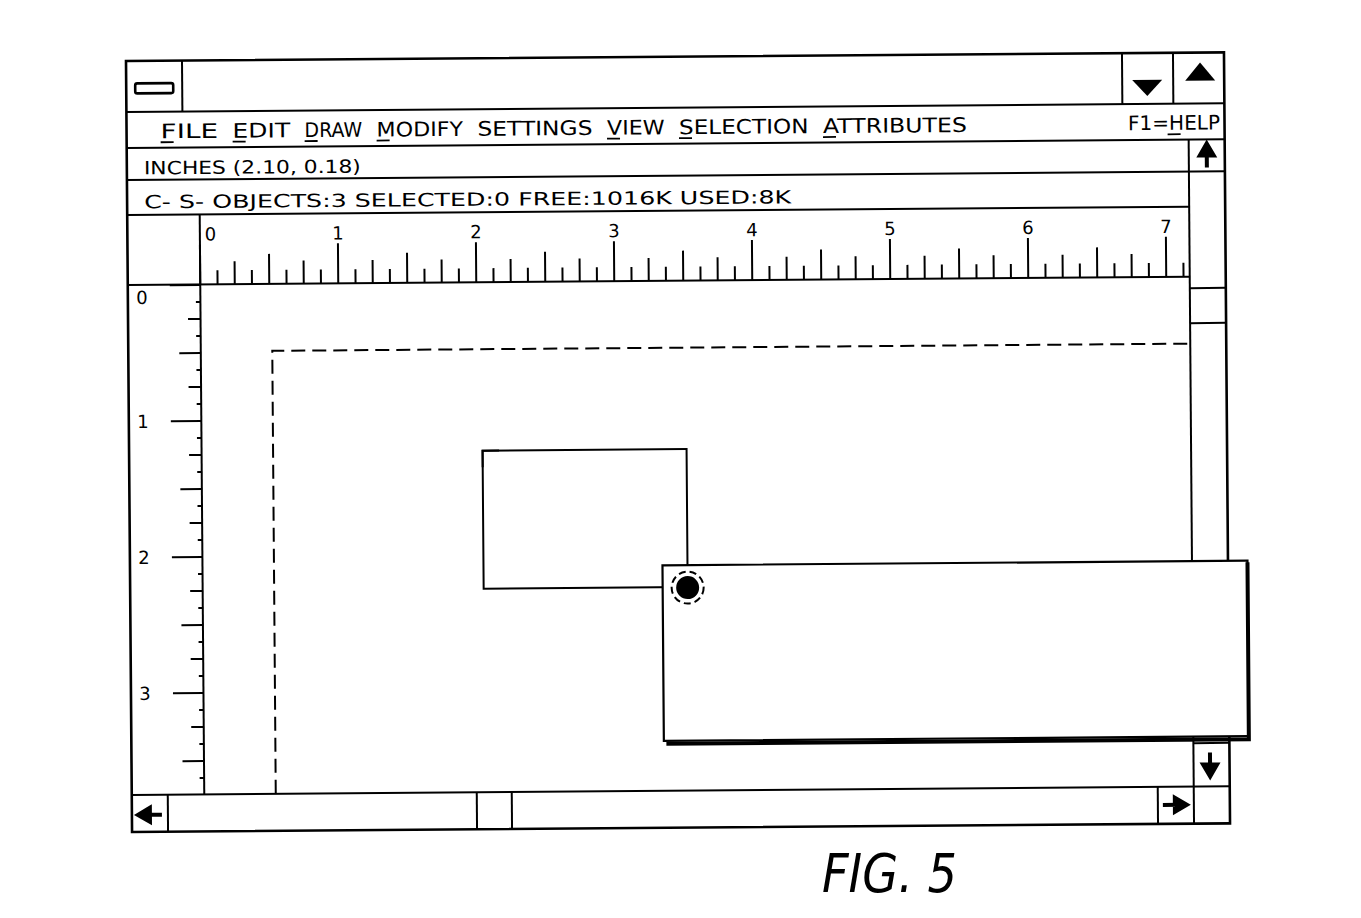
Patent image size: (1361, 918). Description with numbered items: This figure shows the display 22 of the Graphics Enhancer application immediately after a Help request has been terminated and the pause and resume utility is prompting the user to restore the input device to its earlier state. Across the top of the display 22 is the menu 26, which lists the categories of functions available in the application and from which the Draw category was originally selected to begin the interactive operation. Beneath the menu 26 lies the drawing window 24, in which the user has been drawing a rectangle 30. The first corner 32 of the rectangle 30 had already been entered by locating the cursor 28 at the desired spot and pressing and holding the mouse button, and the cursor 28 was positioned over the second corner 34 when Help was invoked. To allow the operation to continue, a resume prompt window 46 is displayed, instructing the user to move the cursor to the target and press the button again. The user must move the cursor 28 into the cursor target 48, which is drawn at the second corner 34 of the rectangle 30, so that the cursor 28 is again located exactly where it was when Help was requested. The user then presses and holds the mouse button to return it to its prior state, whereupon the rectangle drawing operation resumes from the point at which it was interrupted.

The display 22 is at (1227, 367).
The drawing window 24 is at (1152, 506).
The menu 26 is at (1062, 124).
The cursor 28 is at (674, 591).
The rectangle 30 is at (685, 504).
The first corner 32 is at (480, 453).
The second corner 34 is at (674, 606).
The resume prompt window 46 is at (1248, 630).
The cursor target 48 is at (689, 581).